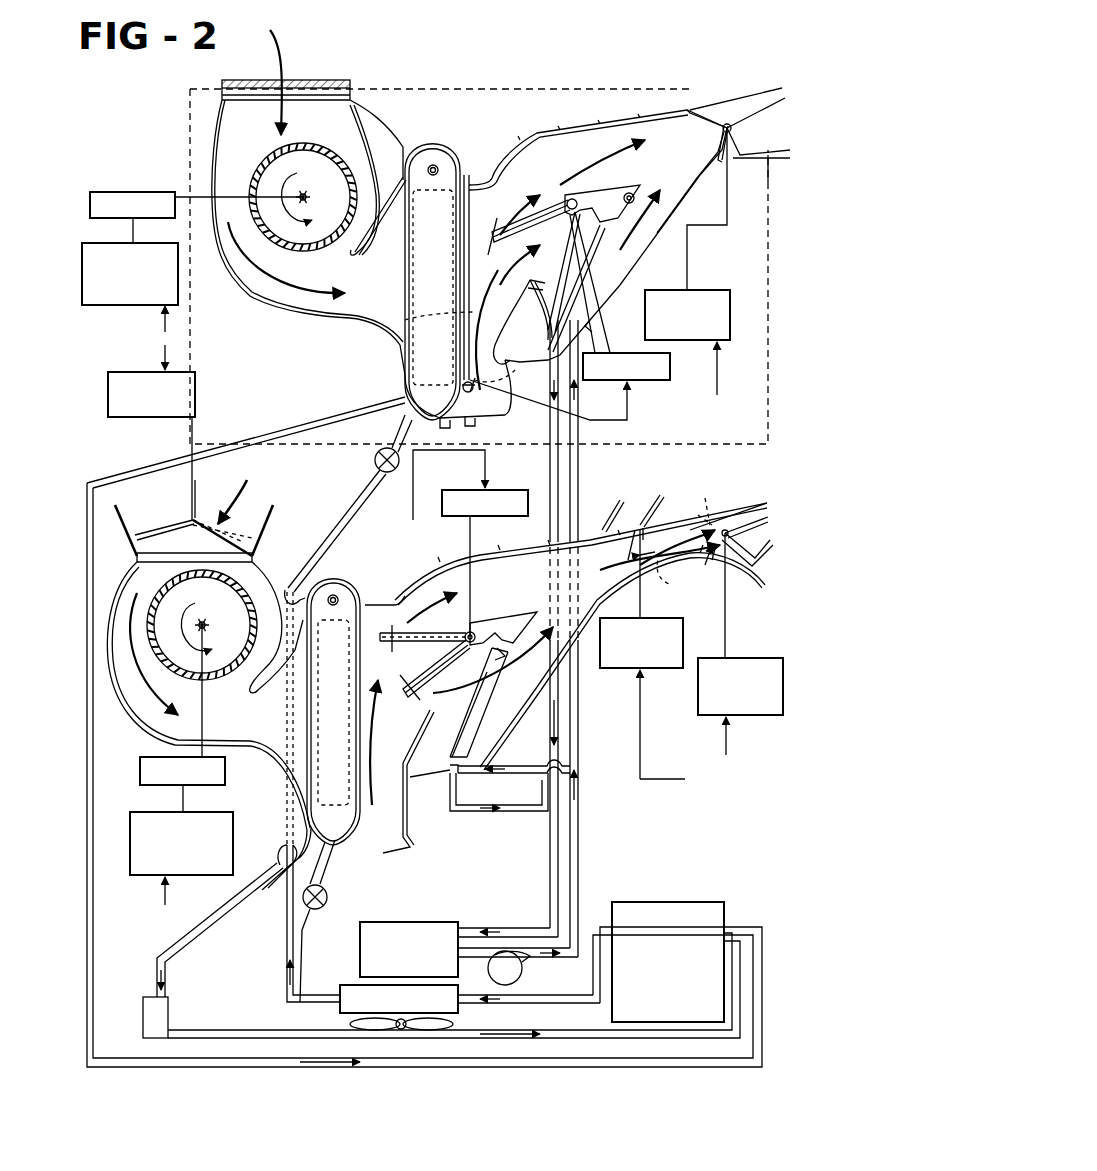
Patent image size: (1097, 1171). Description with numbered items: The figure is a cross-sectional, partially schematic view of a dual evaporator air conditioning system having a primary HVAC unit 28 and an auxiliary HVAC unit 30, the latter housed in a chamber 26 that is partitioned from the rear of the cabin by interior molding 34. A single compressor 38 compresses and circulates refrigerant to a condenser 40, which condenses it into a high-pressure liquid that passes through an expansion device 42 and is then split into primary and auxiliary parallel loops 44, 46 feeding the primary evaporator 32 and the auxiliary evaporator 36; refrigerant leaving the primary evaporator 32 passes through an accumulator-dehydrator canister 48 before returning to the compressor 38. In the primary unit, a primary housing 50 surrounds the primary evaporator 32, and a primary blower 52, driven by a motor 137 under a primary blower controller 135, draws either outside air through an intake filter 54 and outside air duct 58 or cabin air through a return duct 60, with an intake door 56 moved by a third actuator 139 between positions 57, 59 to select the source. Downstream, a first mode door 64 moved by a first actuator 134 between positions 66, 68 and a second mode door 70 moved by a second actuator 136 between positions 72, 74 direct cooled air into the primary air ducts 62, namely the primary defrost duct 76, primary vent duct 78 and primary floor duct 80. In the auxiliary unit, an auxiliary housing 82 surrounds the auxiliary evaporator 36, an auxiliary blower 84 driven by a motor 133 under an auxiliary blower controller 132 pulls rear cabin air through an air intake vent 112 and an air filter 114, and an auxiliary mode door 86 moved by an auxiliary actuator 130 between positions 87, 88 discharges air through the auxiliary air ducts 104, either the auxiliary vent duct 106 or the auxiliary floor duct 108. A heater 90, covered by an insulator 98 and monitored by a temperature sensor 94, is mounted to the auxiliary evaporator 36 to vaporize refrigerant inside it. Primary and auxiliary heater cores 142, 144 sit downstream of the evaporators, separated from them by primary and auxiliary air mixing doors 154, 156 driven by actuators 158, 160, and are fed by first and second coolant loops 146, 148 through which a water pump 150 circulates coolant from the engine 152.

The chamber 26 is at (535, 115).
The primary HVAC unit 28 is at (87, 900).
The auxiliary HVAC unit 30 is at (693, 72).
The primary evaporator 32 is at (356, 712).
The interior molding 34 is at (488, 89).
The auxiliary evaporator 36 is at (437, 282).
The compressor 38 is at (703, 902).
The condenser 40 is at (345, 1003).
The expansion device 42 is at (375, 460).
The primary parallel loop 44 is at (220, 918).
The auxiliary parallel loop 46 is at (88, 560).
The accumulator-dehydrator canister 48 is at (143, 1022).
The primary housing 50 is at (130, 698).
The primary blower 52 is at (147, 623).
The intake filter 54 is at (135, 566).
The intake door 56 is at (178, 512).
The first position of intake door 57 is at (192, 515).
The outside air duct 58 is at (203, 518).
The second position of intake door 59 is at (238, 530).
The return duct 60 is at (160, 522).
The primary air ducts 62 is at (680, 472).
The first mode door 64 is at (640, 560).
The first position of first mode door 66 is at (618, 526).
The second position of first mode door 68 is at (670, 570).
The second mode door 70 is at (712, 560).
The first position of second mode door 72 is at (712, 560).
The second position of second mode door 74 is at (712, 525).
The primary defrost duct 76 is at (638, 510).
The primary vent duct 78 is at (762, 518).
The primary floor duct 80 is at (762, 570).
The auxiliary housing 82 is at (377, 157).
The auxiliary blower 84 is at (340, 153).
The auxiliary mode door 86 is at (700, 120).
The first position of auxiliary mode door 87 is at (712, 128).
The second position of auxiliary mode door 88 is at (712, 150).
The heater 90 is at (385, 347).
The temperature sensor 94 is at (493, 415).
The insulator 98 is at (505, 188).
The auxiliary air ducts 104 is at (775, 252).
The auxiliary vent duct 106 is at (752, 113).
The auxiliary floor duct 108 is at (745, 140).
The air intake vent 112 is at (300, 80).
The air filter 114 is at (320, 113).
The auxiliary actuator 130 is at (700, 290).
The auxiliary blower controller 132 is at (105, 243).
The motor 133 is at (100, 192).
The first actuator 134 is at (667, 668).
The primary blower controller 135 is at (225, 850).
The second actuator 136 is at (783, 682).
The motor 137 is at (140, 775).
The third actuator 139 is at (108, 398).
The primary heater core 142 is at (478, 677).
The auxiliary heater core 144 is at (549, 330).
The first coolant loop 146 is at (475, 800).
The second coolant loop 148 is at (540, 550).
The water pump 150 is at (522, 968).
The engine 152 is at (428, 922).
The primary air mixing door 154 is at (410, 698).
The auxiliary air mixing door 156 is at (546, 226).
The actuator 158 is at (452, 490).
The actuator 160 is at (618, 353).